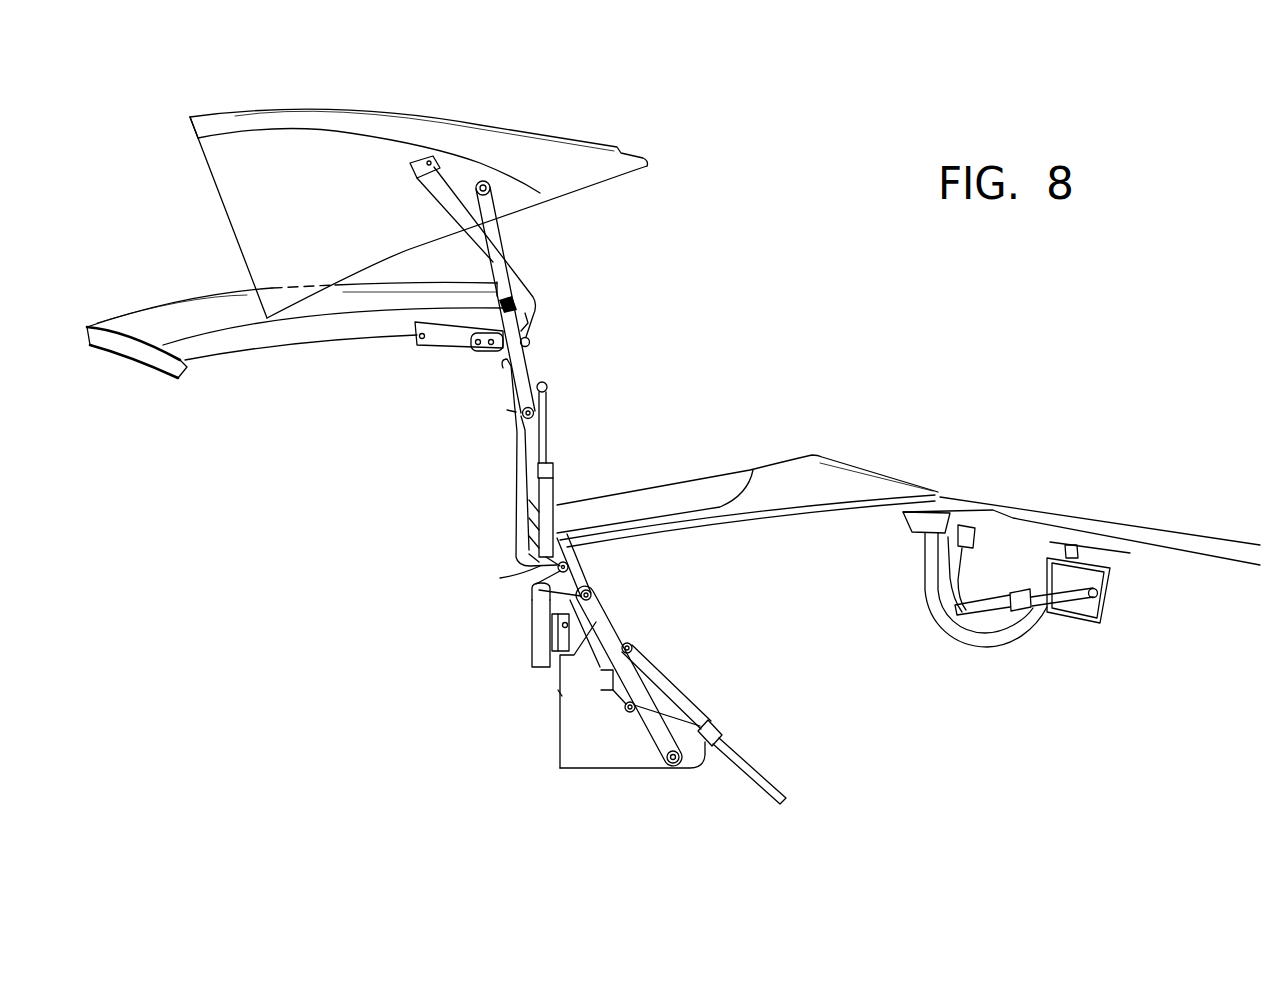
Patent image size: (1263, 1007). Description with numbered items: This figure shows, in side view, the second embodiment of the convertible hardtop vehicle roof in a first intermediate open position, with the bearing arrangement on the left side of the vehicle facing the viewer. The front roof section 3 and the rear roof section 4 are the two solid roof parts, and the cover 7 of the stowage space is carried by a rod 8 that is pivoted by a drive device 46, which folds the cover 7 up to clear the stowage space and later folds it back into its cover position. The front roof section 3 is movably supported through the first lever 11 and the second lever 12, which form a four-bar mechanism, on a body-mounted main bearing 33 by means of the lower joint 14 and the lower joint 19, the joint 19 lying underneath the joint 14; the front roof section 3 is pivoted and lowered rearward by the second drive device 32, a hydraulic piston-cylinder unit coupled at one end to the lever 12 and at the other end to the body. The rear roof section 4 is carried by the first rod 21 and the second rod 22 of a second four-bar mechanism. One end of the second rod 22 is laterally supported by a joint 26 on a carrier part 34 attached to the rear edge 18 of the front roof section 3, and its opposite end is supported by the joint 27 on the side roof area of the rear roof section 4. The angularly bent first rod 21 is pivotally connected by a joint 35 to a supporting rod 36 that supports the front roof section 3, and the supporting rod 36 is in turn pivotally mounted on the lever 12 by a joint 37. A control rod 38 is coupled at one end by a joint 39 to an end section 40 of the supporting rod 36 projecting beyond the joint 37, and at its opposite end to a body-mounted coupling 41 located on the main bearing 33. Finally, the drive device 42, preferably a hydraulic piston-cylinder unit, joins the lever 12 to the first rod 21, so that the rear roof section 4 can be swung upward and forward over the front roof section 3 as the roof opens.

The front roof section 3 is at (177, 310).
The rear roof section 4 is at (520, 126).
The cover 7 is at (843, 490).
The rod 8 is at (957, 633).
The first lever 11 is at (583, 567).
The second lever 12 is at (507, 410).
The lower joint 14 is at (530, 625).
The rear edge 18 is at (530, 308).
The lower joint 19 is at (628, 712).
The first rod 21 is at (497, 238).
The second rod 22 is at (523, 293).
The joint 26 is at (531, 343).
The joint 27 is at (430, 160).
The second drive device 32 is at (673, 697).
The main bearing 33 is at (590, 733).
The carrier part 34 is at (500, 355).
The joint 35 is at (535, 415).
The supporting rod 36 is at (520, 480).
The joint 37 is at (503, 577).
The control rod 38 is at (605, 630).
The joint 39 is at (591, 596).
The end section 40 is at (536, 593).
The coupling 41 is at (675, 763).
The drive device 42 is at (550, 490).
The drive device 46 is at (988, 614).